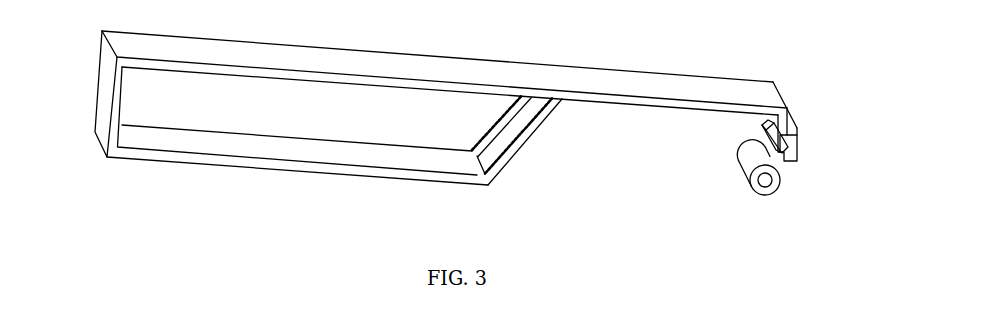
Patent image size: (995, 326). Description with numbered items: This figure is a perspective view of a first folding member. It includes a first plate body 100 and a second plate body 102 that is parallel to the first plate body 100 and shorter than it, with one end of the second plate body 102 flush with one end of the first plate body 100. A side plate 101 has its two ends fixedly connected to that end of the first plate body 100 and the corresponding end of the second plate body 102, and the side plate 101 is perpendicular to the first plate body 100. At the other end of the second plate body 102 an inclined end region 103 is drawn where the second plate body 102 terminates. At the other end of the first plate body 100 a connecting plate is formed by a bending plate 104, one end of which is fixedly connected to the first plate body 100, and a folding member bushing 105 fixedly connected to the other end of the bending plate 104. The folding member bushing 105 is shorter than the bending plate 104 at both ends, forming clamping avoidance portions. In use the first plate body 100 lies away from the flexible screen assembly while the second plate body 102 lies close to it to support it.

The first plate body 100 is at (527, 63).
The side plate 101 is at (107, 110).
The second plate body 102 is at (217, 157).
The slanted end face 103 is at (525, 135).
The bending plate 104 is at (797, 138).
The folding member bushing 105 is at (782, 183).